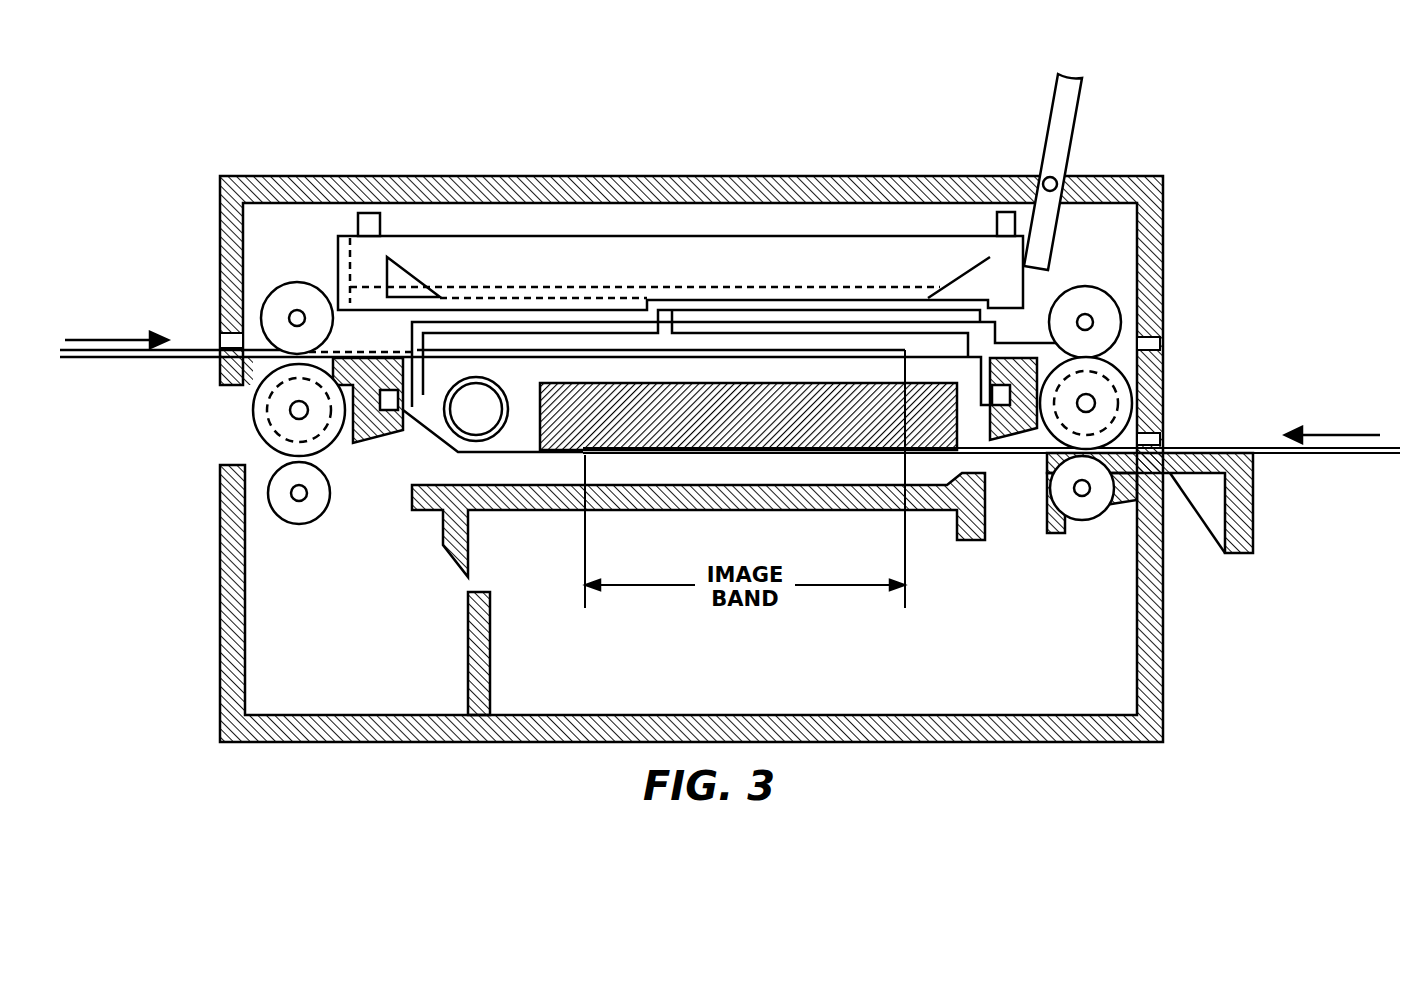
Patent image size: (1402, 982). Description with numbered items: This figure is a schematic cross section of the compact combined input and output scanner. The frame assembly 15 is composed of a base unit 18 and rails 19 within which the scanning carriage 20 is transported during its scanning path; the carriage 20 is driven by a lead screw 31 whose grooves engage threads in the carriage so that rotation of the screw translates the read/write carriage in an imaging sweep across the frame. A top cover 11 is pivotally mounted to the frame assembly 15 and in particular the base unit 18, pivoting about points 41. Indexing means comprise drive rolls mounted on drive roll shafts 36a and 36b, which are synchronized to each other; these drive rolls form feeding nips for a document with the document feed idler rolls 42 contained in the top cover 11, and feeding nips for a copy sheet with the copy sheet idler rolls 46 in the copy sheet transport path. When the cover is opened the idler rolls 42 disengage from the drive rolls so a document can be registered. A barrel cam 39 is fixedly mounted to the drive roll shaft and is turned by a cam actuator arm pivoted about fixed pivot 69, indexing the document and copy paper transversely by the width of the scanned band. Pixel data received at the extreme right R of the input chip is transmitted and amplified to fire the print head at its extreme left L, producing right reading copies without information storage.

The top cover 11 is at (1049, 125).
The pivot points 41 is at (1057, 179).
The frame assembly 15 is at (1163, 225).
The base unit 18 is at (1163, 643).
The fixed pivot 69 is at (358, 222).
The document feed idler rolls 42 is at (297, 282).
The barrel cam 39 is at (255, 410).
The drive roll shaft 36b is at (292, 414).
The drive roll shaft 36a is at (1133, 404).
The copy sheet idler rolls 46 is at (290, 522).
The lead screw 31 is at (476, 410).
The scanning carriage 20 is at (528, 399).
The rails 19 is at (358, 447).
The extreme left of the print head L is at (582, 455).
The extreme right of the input chip R is at (905, 351).